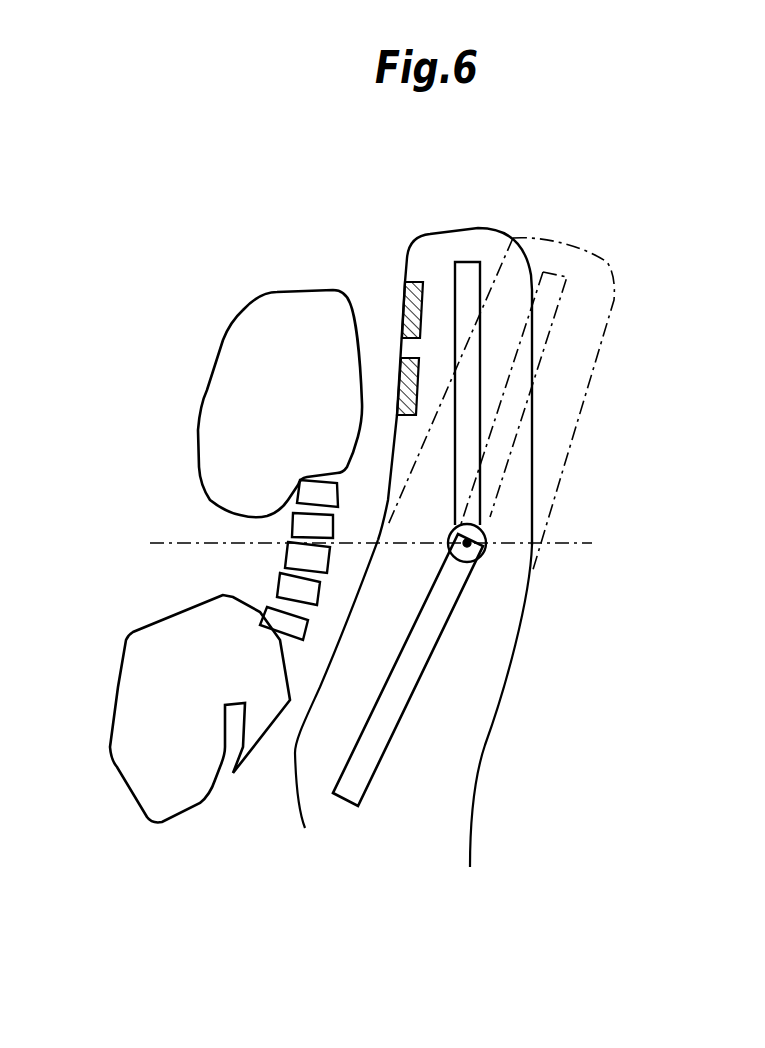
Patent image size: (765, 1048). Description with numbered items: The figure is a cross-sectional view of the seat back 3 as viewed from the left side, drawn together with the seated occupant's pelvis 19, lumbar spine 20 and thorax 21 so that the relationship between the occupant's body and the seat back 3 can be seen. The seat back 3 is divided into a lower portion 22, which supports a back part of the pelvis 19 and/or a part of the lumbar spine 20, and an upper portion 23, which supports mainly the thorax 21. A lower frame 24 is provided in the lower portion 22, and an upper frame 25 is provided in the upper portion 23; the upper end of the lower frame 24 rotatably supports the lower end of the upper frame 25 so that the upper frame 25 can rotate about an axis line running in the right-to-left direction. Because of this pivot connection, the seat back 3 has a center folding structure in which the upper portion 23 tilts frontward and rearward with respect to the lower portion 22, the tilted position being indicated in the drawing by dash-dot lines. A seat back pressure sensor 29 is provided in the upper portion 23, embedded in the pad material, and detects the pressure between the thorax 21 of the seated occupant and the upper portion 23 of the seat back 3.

The seat back 3 is at (489, 208).
The upper portion 23 is at (417, 226).
The seat back pressure sensor 29 is at (400, 360).
The upper frame 25 is at (468, 397).
The lower frame 24 is at (390, 713).
The lower portion 22 is at (283, 774).
The thorax 21 is at (238, 357).
The lumbar spine 20 is at (283, 583).
The pelvis 19 is at (135, 712).